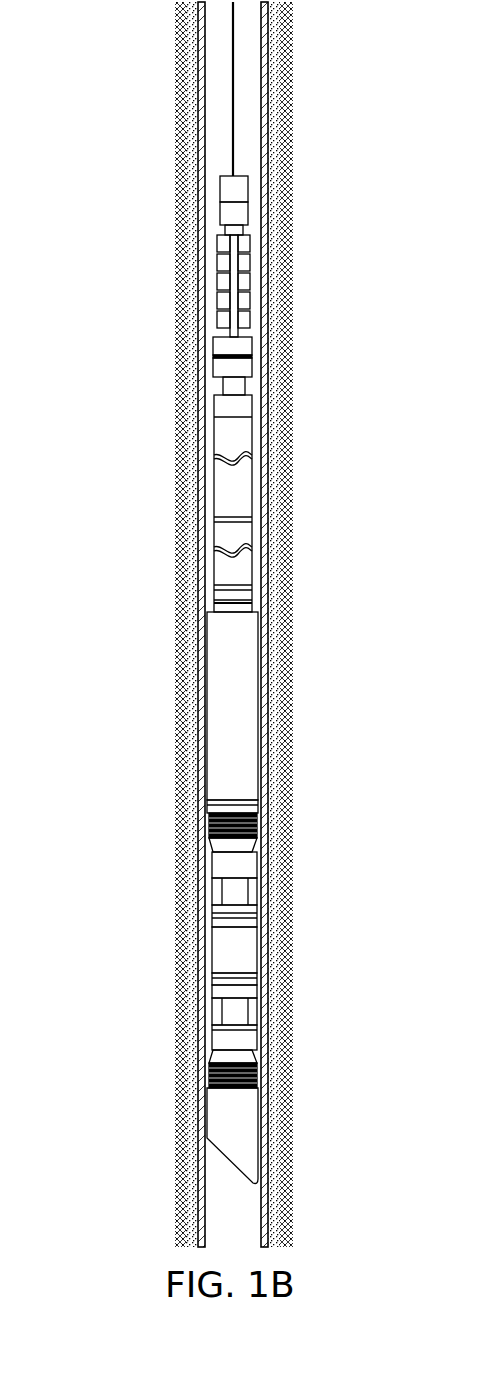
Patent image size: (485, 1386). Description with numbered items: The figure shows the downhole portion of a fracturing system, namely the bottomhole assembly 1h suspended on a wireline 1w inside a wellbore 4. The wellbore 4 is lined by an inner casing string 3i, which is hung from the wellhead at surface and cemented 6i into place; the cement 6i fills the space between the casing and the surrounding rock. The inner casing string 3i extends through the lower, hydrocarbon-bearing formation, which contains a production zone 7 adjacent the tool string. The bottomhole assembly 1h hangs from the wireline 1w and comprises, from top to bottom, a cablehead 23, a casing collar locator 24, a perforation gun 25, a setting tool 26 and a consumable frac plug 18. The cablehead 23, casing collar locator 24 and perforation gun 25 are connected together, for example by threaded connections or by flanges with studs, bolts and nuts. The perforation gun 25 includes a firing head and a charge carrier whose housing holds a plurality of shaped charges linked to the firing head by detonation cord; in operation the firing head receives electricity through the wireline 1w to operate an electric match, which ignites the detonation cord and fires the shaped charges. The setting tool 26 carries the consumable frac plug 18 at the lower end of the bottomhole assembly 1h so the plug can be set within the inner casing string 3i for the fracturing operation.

The bottomhole assembly 1h is at (82, 45).
The wireline 1w is at (233, 82).
The production zone 7 is at (292, 140).
The cablehead 23 is at (220, 187).
The casing collar locator 24 is at (220, 213).
The perforation gun 25 is at (218, 278).
The setting tool 26 is at (240, 432).
The consumable frac plug 18 is at (250, 952).
The cement 6i is at (193, 1163).
The inner casing string 3i is at (202, 1207).
The wellbore 4 is at (238, 1225).